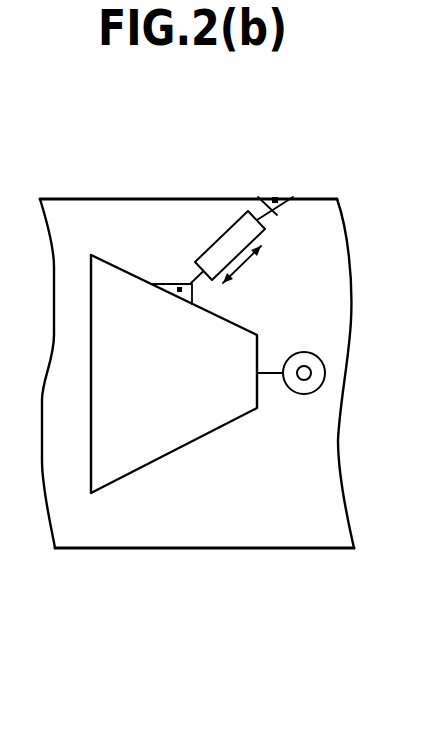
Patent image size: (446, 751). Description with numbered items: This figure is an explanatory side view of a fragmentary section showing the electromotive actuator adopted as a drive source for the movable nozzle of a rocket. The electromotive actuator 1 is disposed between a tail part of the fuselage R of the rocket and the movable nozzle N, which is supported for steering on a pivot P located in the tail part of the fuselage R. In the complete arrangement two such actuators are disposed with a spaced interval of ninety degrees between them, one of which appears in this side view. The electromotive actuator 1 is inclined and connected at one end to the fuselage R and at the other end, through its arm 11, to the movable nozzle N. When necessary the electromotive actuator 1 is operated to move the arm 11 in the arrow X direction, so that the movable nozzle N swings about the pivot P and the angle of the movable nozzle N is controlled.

The electromotive actuator 1 is at (220, 236).
The arm 11 is at (190, 282).
The pivot P is at (303, 352).
The fuselage R is at (113, 549).
The movable nozzle N is at (166, 458).
The arrow X direction X is at (242, 269).